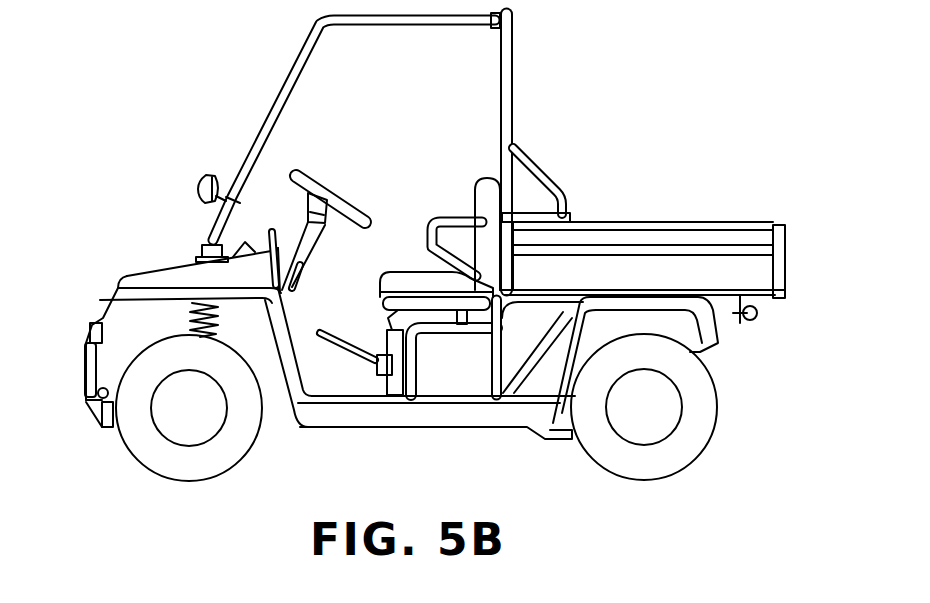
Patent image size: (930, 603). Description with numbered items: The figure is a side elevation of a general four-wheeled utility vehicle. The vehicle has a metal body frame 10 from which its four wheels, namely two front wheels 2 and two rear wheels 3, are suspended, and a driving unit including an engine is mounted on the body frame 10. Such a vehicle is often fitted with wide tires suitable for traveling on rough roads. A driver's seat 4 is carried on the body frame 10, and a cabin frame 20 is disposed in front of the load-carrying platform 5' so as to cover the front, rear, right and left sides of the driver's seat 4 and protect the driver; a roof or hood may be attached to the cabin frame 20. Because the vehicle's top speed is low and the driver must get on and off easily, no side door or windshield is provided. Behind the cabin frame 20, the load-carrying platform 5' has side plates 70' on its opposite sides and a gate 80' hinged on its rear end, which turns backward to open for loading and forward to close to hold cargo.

The front wheels 2 is at (147, 450).
The rear wheels 3 is at (690, 450).
The driver's seat 4 is at (484, 188).
The load-carrying platform 5' is at (642, 216).
The body frame 10 is at (408, 415).
The cabin frame 20 is at (315, 27).
The side plates 70' is at (643, 231).
The gate 80' is at (821, 260).